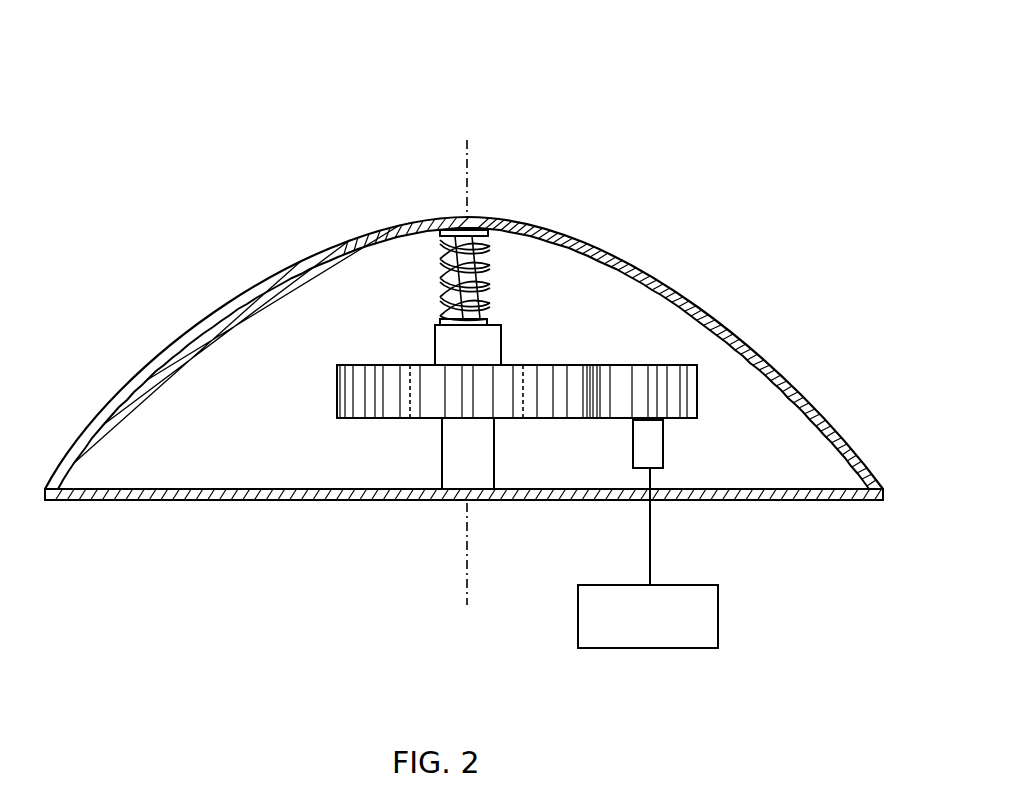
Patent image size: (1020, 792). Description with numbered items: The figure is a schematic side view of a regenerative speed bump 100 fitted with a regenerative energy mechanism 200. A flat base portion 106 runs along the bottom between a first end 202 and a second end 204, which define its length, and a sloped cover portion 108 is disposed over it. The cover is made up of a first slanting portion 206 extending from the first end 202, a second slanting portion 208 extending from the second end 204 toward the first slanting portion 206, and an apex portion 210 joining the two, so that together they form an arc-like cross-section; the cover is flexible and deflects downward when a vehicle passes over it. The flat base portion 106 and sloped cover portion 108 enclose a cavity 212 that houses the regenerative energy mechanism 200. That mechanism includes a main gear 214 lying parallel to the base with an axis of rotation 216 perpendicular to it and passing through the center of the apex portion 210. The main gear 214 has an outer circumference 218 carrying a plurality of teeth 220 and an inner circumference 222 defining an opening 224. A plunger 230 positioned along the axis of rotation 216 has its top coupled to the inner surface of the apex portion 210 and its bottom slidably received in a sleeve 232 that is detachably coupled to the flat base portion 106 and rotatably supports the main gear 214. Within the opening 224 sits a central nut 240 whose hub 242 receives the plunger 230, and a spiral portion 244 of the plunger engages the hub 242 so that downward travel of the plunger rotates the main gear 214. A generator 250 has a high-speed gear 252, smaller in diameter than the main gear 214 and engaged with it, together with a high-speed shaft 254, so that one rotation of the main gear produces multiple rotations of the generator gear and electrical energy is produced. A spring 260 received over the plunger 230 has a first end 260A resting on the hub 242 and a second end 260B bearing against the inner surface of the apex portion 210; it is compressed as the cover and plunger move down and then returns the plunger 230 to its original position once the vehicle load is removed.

The regenerative speed bump 100 is at (203, 70).
The flat base portion 106 is at (358, 501).
The sloped cover portion 108 is at (668, 261).
The regenerative energy mechanism 200 is at (503, 326).
The first end 202 is at (41, 494).
The second end 204 is at (888, 495).
The first slanting portion 206 is at (270, 283).
The second slanting portion 208 is at (680, 300).
The apex portion 210 is at (460, 214).
The cavity 212 is at (308, 344).
The main gear 214 is at (383, 419).
The axis of rotation 216 is at (473, 140).
The outer circumference 218 is at (336, 383).
The teeth 220 is at (380, 408).
The inner circumference 222 is at (523, 400).
The opening 224 is at (421, 355).
The plunger 230 is at (493, 314).
The sleeve 232 is at (494, 437).
The central nut 240 is at (566, 285).
The hub 242 is at (502, 366).
The spiral portion 244 is at (437, 232).
The generator 250 is at (667, 641).
The high-speed gear 252 is at (697, 390).
The high-speed shaft 254 is at (663, 437).
The spring 260 is at (490, 229).
The first end 260A is at (440, 309).
The second end 260B is at (440, 223).